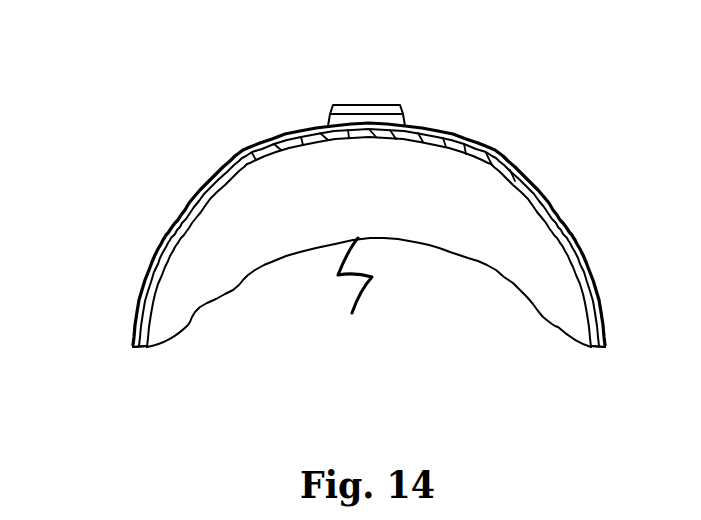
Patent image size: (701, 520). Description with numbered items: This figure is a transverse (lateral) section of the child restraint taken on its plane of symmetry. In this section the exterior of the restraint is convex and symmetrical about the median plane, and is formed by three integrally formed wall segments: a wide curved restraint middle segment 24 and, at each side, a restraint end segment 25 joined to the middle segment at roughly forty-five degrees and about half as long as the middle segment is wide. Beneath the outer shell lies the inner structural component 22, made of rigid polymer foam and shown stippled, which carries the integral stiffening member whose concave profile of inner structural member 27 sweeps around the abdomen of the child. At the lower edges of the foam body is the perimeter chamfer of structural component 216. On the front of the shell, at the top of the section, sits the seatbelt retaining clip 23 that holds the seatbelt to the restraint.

The inner structural component 22 is at (452, 195).
The seatbelt retaining clip 23 is at (377, 102).
The restraint middle segment 24 is at (443, 128).
The restraint end segment 25 is at (155, 250).
The concave profile of inner structural member 27 is at (345, 294).
The perimeter chamfer of structural component 216 is at (188, 325).